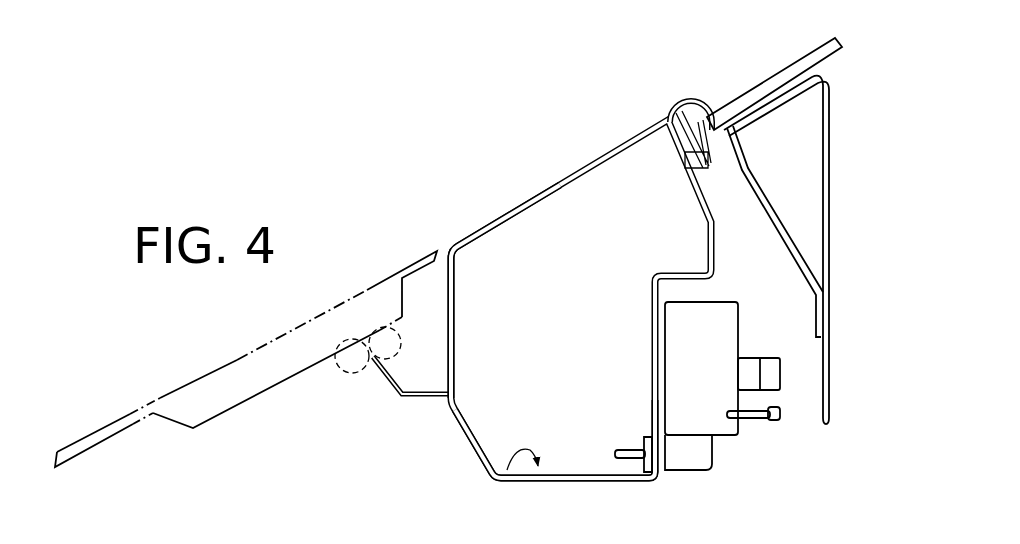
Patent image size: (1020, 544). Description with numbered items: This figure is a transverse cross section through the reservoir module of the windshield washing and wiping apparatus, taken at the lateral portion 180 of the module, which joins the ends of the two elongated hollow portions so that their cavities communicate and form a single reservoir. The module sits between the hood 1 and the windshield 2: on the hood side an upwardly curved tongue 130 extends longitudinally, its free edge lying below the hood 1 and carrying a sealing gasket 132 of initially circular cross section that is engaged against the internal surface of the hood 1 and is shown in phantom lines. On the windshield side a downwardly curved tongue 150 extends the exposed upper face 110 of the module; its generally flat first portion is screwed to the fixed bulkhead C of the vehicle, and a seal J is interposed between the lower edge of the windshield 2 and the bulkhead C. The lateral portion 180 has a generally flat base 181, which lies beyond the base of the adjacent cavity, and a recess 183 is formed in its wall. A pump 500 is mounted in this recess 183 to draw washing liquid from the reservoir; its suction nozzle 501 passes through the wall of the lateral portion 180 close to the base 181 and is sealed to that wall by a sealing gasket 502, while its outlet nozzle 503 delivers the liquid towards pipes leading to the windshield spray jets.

The hood 1 is at (237, 378).
The windshield 2 is at (803, 58).
The upper face 110 is at (542, 183).
The tongue 130 is at (424, 399).
The sealing gasket 132 is at (368, 367).
The tongue 150 is at (693, 100).
The lateral portion 180 is at (497, 197).
The base 181 is at (507, 472).
The recess 183 is at (714, 289).
The pump 500 is at (718, 408).
The suction nozzle 501 is at (633, 462).
The sealing gasket 502 is at (663, 468).
The outlet nozzle 503 is at (771, 420).
The seal J is at (735, 133).
The bulkhead C is at (832, 168).